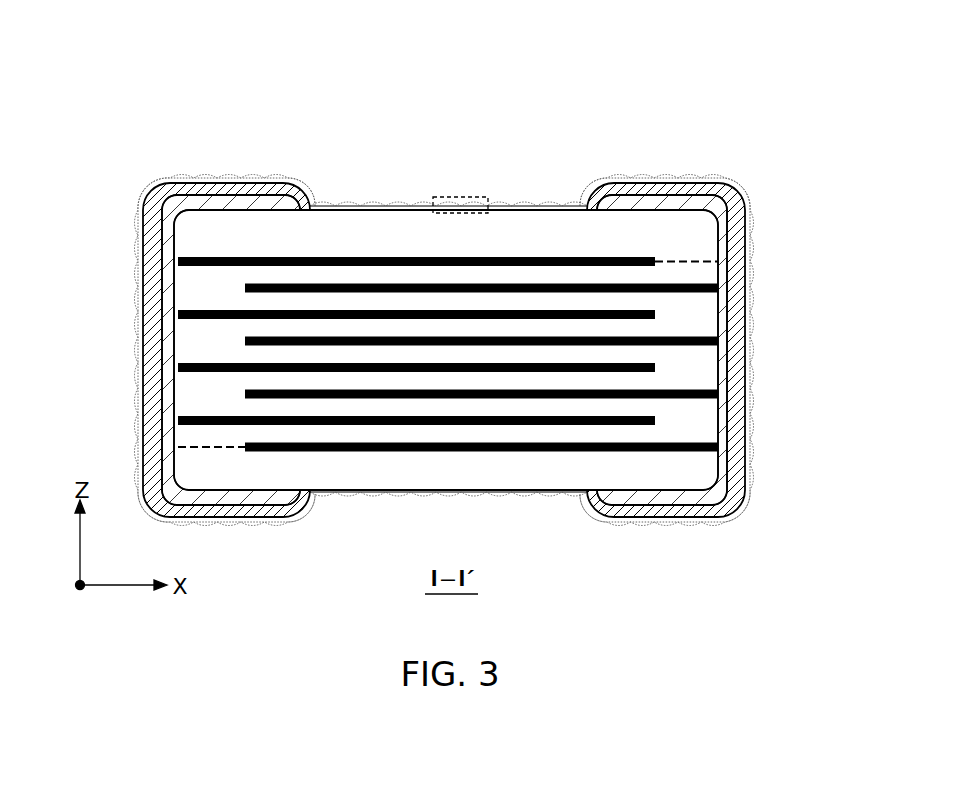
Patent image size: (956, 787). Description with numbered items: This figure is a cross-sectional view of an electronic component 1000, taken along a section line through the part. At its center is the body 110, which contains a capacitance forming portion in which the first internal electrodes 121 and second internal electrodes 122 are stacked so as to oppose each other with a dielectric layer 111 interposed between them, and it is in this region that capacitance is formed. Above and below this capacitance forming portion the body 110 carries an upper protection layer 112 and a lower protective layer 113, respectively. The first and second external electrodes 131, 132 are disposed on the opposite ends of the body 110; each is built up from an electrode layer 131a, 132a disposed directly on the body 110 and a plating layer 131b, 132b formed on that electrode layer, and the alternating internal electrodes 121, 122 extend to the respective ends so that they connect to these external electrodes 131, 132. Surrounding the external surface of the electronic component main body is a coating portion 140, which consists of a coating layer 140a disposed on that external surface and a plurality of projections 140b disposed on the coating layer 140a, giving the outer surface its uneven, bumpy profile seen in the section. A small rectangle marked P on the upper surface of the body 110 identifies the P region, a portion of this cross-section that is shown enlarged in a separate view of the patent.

The electronic component 1000 is at (478, 38).
The body 110 is at (378, 208).
The dielectric layer 111 is at (335, 278).
The upper protection layer 112 is at (407, 240).
The lower protective layer 113 is at (433, 470).
The first internal electrode 121 is at (515, 258).
The second internal electrode 122 is at (563, 287).
The first external electrode 131 is at (62, 298).
The first electrode layer 131a is at (165, 317).
The first plating layer 131b is at (150, 368).
The second external electrode 132 is at (831, 298).
The second electrode layer 132a is at (728, 313).
The second plating layer 132b is at (745, 367).
The coating portion 140 is at (175, 114).
The coating layer 140a is at (205, 180).
The projections 140b is at (248, 180).
The P region P is at (458, 197).